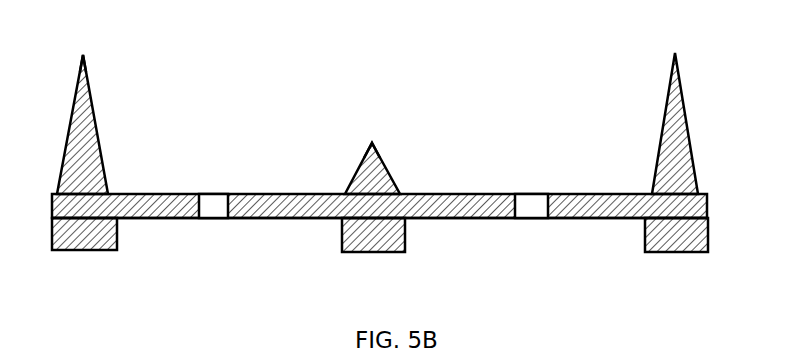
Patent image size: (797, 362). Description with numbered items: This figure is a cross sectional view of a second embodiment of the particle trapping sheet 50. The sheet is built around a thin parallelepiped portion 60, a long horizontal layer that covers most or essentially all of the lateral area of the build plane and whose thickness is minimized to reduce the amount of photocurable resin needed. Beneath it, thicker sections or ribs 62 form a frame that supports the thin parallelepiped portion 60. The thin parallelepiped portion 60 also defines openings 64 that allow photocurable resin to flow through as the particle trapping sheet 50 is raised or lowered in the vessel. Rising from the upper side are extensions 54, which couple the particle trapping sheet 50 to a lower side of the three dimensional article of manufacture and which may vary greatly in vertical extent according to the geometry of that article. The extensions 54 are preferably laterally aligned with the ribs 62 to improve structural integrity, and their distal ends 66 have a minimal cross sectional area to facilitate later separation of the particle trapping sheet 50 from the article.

The particle trapping sheet 50 is at (698, 210).
The extensions 54 is at (91, 125).
The thin parallelepiped portion 60 is at (172, 218).
The ribs 62 is at (85, 250).
The openings 64 is at (207, 194).
The distal ends 66 is at (83, 55).